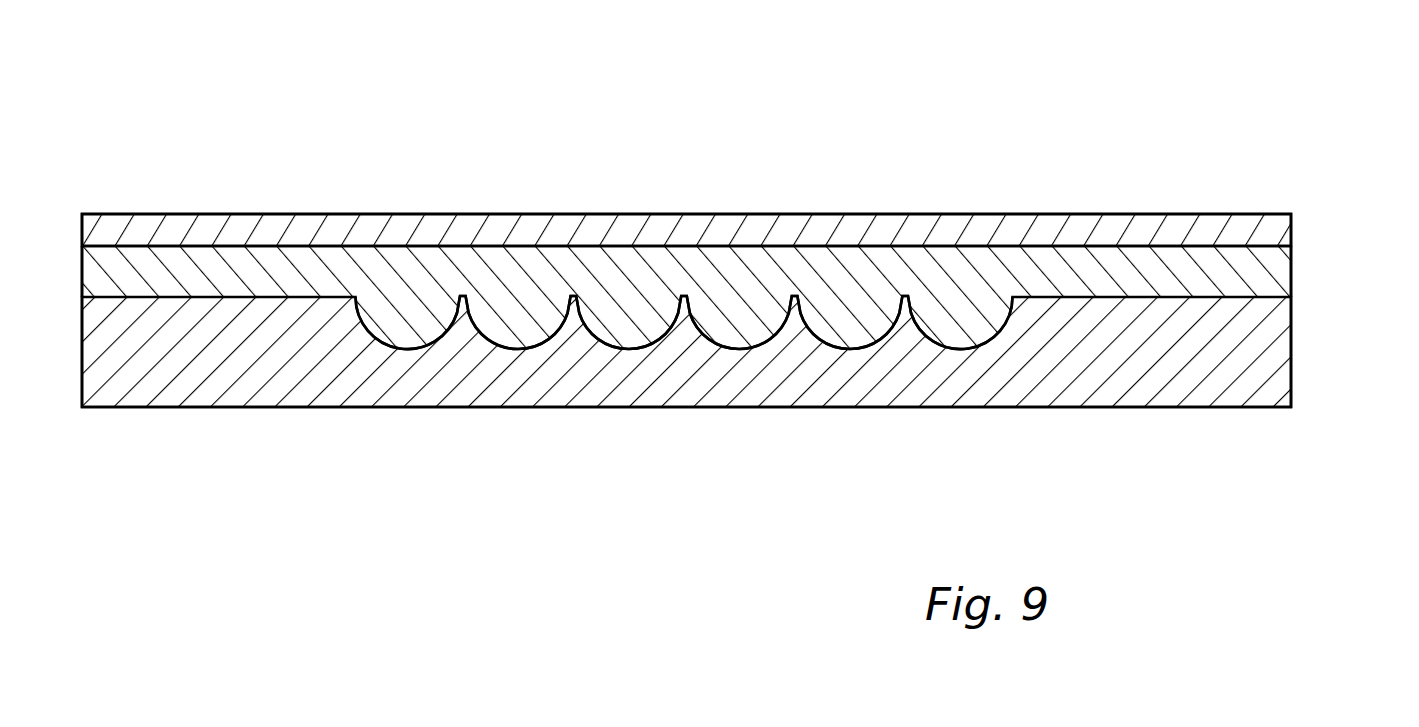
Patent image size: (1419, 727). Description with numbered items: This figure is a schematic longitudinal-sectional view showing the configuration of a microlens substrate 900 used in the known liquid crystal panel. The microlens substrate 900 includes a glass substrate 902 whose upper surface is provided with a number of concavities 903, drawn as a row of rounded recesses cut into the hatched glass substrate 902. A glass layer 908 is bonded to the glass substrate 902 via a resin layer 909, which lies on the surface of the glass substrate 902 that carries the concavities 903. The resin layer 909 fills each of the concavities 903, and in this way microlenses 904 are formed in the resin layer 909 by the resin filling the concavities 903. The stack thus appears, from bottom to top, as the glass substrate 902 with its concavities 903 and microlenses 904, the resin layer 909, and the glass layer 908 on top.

The microlens substrate 900 is at (1238, 147).
The glass substrate 902 is at (1278, 355).
The concavities 903 is at (850, 347).
The microlenses 904 is at (745, 332).
The glass layer 908 is at (1278, 232).
The resin layer 909 is at (1277, 273).